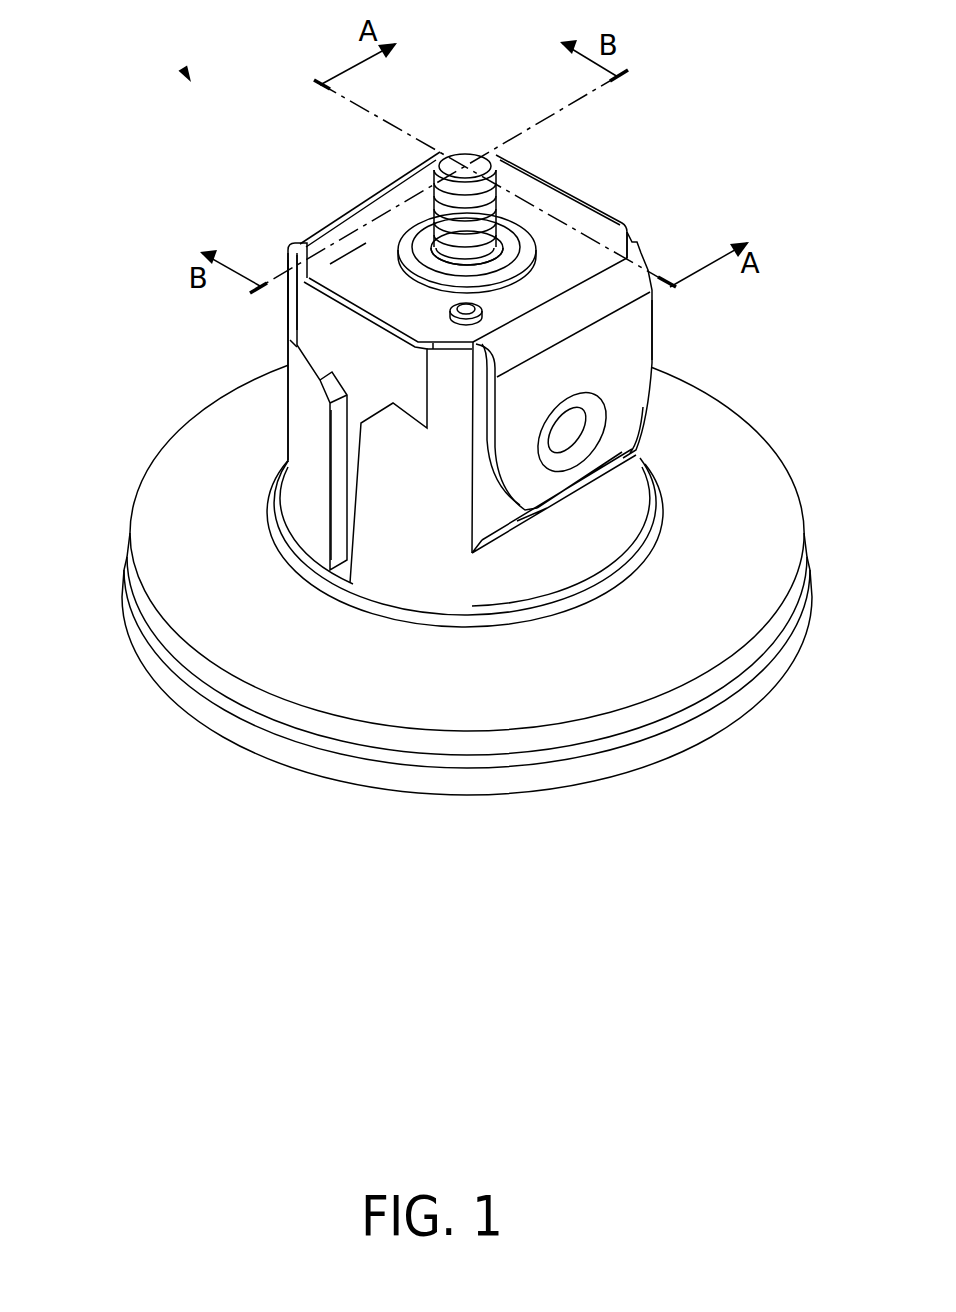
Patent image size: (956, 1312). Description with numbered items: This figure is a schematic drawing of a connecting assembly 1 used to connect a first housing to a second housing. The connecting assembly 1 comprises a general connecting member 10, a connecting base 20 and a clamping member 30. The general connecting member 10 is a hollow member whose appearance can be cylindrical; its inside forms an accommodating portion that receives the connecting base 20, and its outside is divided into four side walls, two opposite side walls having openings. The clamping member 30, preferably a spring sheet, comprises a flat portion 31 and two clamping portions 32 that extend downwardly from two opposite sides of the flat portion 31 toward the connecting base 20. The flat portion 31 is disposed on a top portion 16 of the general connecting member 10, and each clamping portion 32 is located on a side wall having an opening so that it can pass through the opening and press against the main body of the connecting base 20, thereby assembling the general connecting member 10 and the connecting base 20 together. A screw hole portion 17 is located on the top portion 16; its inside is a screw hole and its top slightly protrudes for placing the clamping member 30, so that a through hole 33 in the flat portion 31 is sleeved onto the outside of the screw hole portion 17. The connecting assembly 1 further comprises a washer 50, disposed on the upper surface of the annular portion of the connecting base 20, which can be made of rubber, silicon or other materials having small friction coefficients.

The connecting assembly 1 is at (188, 76).
The general connecting member 10 is at (297, 423).
The top portion 16 is at (290, 243).
The screw hole portion 17 is at (436, 198).
The connecting base 20 is at (267, 747).
The clamping member 30 is at (373, 213).
The flat portion 31 is at (513, 163).
The clamping portion 32 is at (286, 318).
The through hole 33 is at (533, 220).
The washer 50 is at (147, 522).